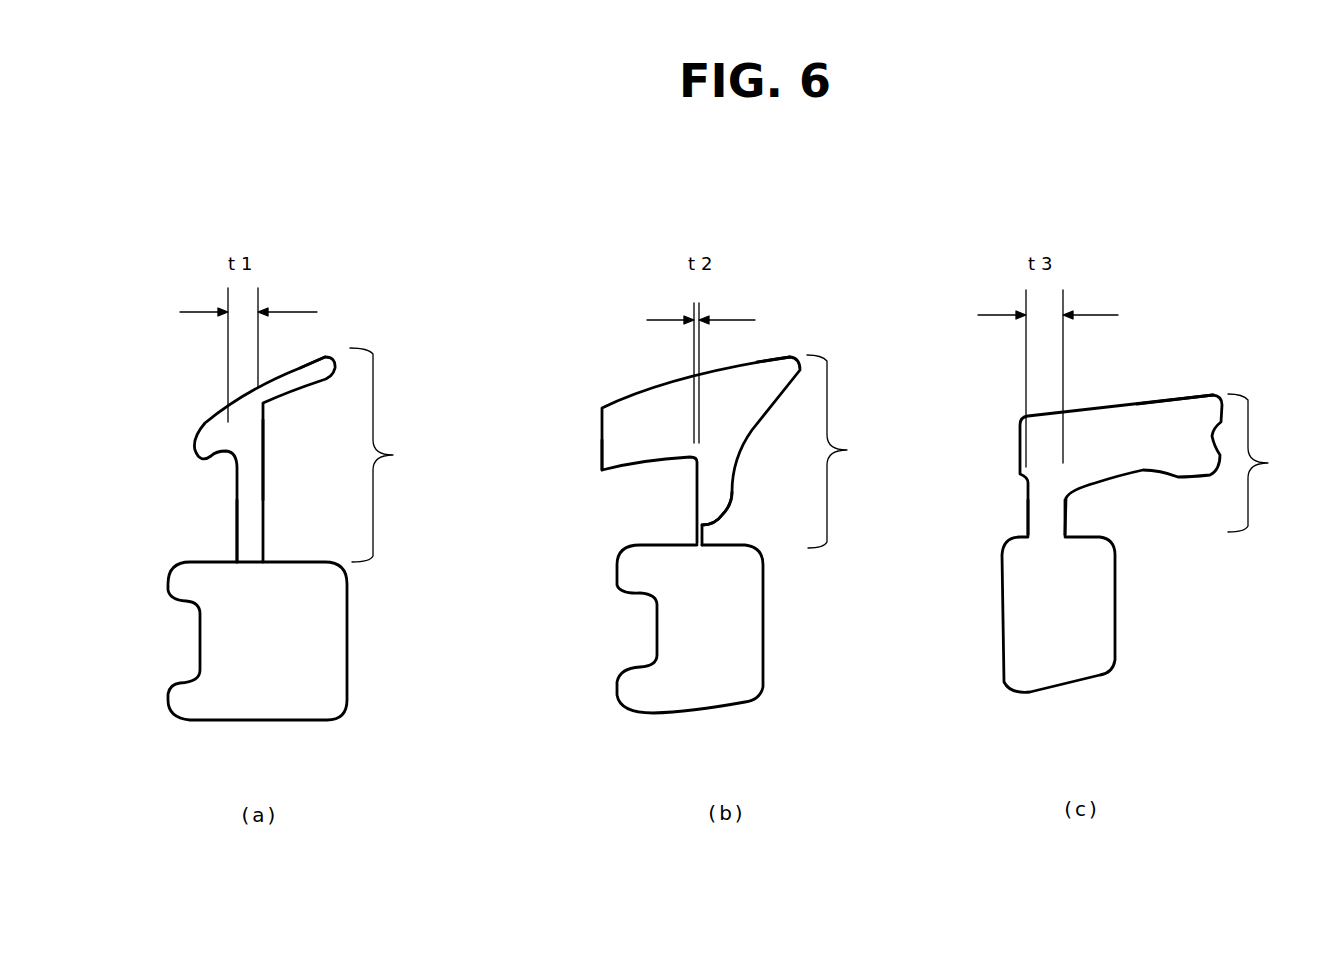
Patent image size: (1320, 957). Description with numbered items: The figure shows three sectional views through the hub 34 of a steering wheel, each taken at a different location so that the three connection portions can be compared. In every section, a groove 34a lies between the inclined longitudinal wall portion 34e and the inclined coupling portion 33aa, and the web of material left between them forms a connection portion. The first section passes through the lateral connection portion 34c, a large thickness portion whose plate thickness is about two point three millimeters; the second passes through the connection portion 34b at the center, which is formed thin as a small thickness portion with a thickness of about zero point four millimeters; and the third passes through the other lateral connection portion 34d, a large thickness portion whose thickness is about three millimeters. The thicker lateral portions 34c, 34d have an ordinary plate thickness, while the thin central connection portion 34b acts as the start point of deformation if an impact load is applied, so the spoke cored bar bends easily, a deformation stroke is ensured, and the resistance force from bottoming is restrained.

The hub 34 is at (753, 455).
The groove 34a is at (203, 503).
The connection portion 34b is at (703, 525).
The connection portion 34c is at (263, 498).
The connection portion 34d is at (1068, 517).
The inclined longitudinal wall portion 34e is at (297, 356).
The inclined coupling portion 33aa is at (302, 648).